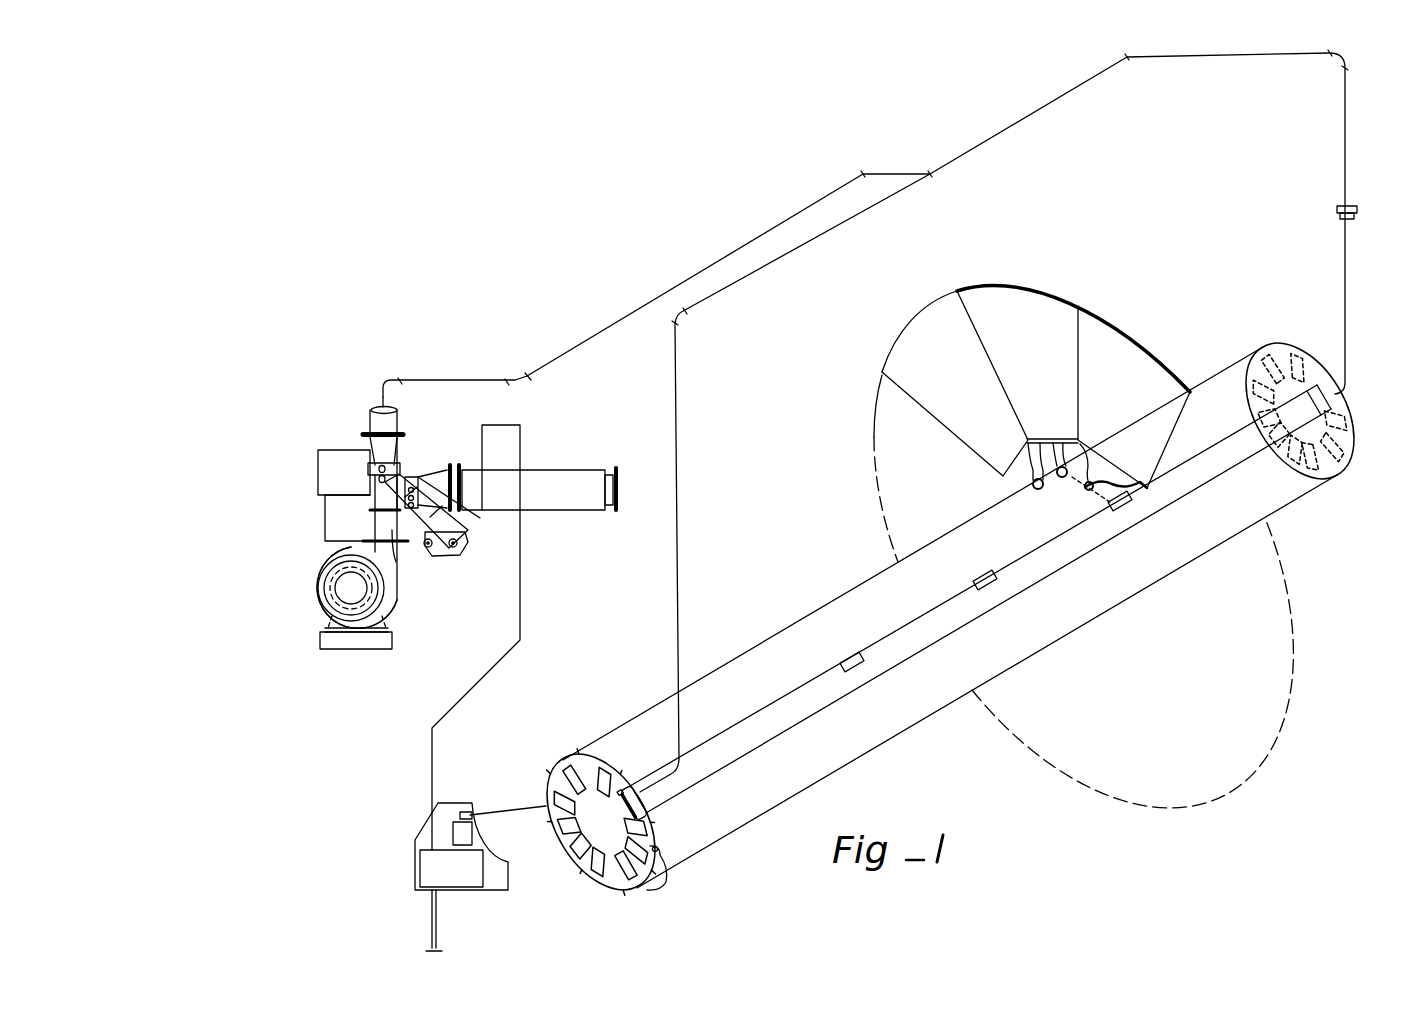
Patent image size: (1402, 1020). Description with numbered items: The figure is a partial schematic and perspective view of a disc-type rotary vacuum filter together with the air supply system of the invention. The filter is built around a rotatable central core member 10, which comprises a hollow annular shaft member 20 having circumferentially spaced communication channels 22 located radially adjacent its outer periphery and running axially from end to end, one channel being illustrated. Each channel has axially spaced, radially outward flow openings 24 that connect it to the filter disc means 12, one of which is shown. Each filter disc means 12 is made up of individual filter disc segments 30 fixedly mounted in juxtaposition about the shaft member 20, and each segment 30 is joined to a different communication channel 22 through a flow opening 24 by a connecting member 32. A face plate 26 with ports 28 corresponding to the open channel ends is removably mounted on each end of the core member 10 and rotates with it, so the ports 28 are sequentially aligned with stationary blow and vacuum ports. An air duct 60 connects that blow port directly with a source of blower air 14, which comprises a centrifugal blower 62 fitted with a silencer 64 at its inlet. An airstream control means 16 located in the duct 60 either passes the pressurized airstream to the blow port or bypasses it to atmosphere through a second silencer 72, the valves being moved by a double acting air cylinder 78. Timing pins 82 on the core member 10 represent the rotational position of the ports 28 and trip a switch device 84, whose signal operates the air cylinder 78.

The central core member 10 is at (869, 748).
The filter disc means 12 is at (1291, 672).
The source of blower air 14 is at (312, 569).
The airstream control means 16 is at (416, 468).
The hollow annular shaft member 20 is at (800, 620).
The communication channel 22 is at (1040, 582).
The flow opening 24 is at (855, 659).
The face plate 26 is at (580, 760).
The port 28 is at (565, 772).
The filter disc segment 30 is at (957, 385).
The connecting member 32 is at (1030, 484).
The air duct 60 is at (697, 274).
The centrifugal blower 62 is at (311, 599).
The silencer 64 is at (318, 472).
The silencer 72 is at (560, 470).
The double acting air cylinder 78 is at (465, 530).
The timing pins 82 is at (664, 886).
The switch device 84 is at (423, 833).